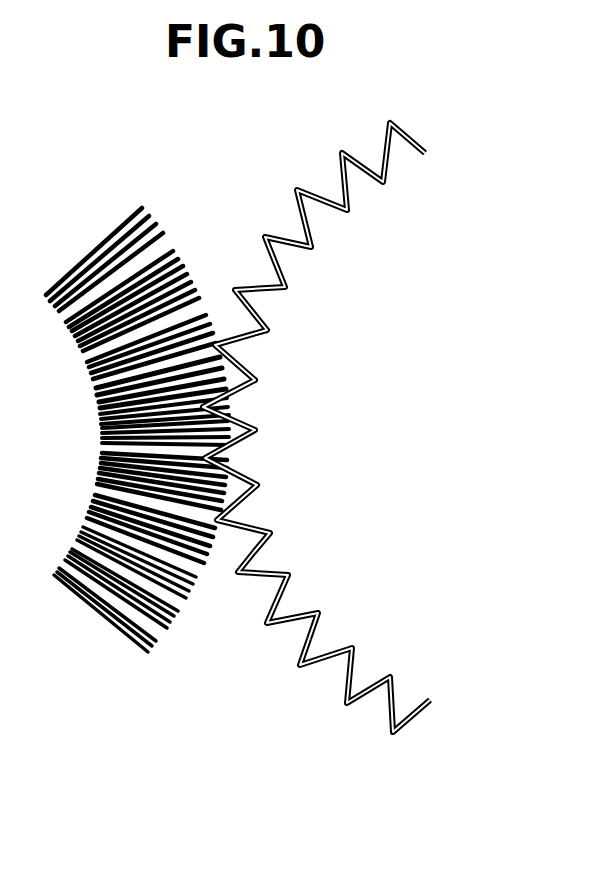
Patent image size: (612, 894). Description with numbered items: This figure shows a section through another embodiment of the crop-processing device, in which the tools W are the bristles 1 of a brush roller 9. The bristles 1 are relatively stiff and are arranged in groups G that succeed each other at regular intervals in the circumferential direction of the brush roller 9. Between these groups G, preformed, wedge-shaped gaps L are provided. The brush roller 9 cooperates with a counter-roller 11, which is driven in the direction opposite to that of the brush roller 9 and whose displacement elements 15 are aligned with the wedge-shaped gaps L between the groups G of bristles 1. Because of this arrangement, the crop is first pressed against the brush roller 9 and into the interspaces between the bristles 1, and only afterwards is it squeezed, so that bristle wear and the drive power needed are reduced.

The bristles 1 is at (143, 475).
The brush roller 9 is at (150, 660).
The counter-roller 11 is at (316, 439).
The displacement elements 15 is at (265, 623).
The groups of tools G is at (208, 299).
The wedge-shaped gaps L is at (190, 564).
The tools W is at (109, 655).